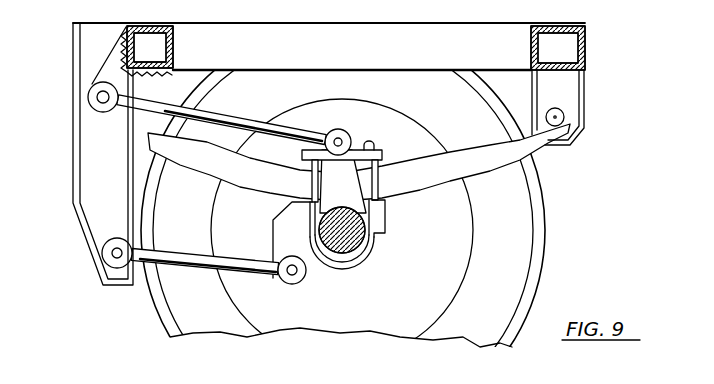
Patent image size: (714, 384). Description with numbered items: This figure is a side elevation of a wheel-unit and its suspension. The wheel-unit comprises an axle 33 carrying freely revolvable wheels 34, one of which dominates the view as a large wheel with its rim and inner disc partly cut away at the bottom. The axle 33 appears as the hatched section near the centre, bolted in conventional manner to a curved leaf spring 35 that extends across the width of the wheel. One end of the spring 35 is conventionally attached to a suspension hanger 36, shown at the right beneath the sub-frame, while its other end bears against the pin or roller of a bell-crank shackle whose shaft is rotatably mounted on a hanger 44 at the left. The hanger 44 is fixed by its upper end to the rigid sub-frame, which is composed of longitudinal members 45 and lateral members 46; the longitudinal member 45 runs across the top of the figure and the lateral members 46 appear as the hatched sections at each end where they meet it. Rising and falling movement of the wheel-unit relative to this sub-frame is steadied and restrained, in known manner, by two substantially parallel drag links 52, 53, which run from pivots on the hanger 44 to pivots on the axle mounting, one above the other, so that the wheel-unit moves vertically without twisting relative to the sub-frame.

The axle 33 is at (338, 262).
The wheel 34 is at (533, 274).
The spring 35 is at (518, 152).
The suspension hanger 36 is at (573, 110).
The hanger 44 is at (97, 230).
The longitudinal member 45 is at (393, 40).
The lateral member 46 is at (150, 43).
The drag link 52 is at (167, 106).
The drag link 53 is at (160, 266).